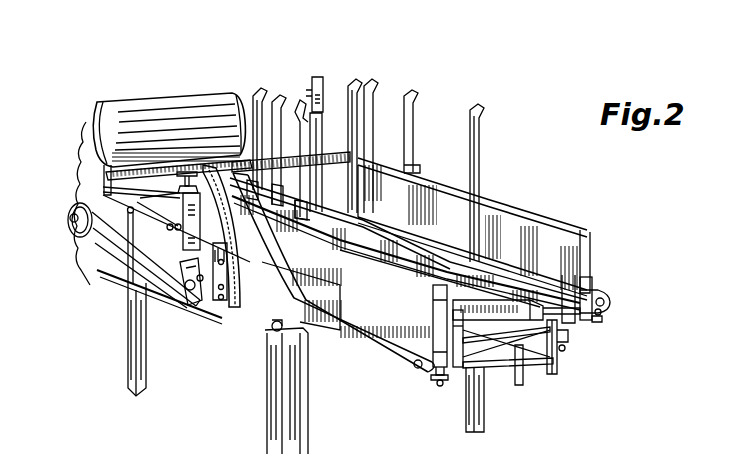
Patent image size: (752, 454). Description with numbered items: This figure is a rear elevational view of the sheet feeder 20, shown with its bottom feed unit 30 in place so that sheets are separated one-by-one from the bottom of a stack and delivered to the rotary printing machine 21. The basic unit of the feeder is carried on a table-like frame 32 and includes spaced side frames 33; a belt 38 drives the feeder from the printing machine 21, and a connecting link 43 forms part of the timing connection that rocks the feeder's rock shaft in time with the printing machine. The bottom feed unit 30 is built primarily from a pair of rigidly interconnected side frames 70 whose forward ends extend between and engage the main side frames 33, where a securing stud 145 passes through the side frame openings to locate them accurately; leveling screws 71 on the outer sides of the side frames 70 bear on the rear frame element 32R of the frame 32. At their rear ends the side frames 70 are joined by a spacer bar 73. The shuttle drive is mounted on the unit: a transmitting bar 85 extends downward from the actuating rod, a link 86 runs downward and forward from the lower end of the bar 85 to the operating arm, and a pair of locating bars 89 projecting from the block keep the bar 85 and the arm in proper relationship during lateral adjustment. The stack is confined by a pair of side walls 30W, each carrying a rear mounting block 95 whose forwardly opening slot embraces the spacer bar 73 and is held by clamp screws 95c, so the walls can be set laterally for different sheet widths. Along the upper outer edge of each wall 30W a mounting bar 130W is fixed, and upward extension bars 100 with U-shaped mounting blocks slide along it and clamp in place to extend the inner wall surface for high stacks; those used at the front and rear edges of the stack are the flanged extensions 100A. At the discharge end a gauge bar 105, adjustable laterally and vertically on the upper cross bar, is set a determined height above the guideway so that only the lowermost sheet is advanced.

The sheet feeder 20 is at (122, 301).
The rotary printing machine 21 is at (135, 86).
The bottom feed unit 30 is at (527, 194).
The side walls 30W is at (554, 240).
The frame 32 is at (272, 420).
The rear frame element 32R is at (312, 352).
The side frames 33 is at (220, 305).
The belt 38 is at (86, 252).
The connecting link 43 is at (146, 292).
The side frames 70 is at (380, 358).
The leveling screws 71 is at (270, 333).
The spacer bar 73 is at (603, 319).
The transmitting bar 85 is at (560, 340).
The link 86 is at (498, 370).
The locating bars 89 is at (560, 355).
The rear mounting block 95 is at (435, 310).
The clamp screws 95c is at (440, 383).
The upward extension bars 100 is at (418, 92).
The extensions 100A is at (255, 90).
The gauge bar 105 is at (320, 86).
The mounting bar 130W is at (355, 232).
The securing stud 145 is at (248, 222).